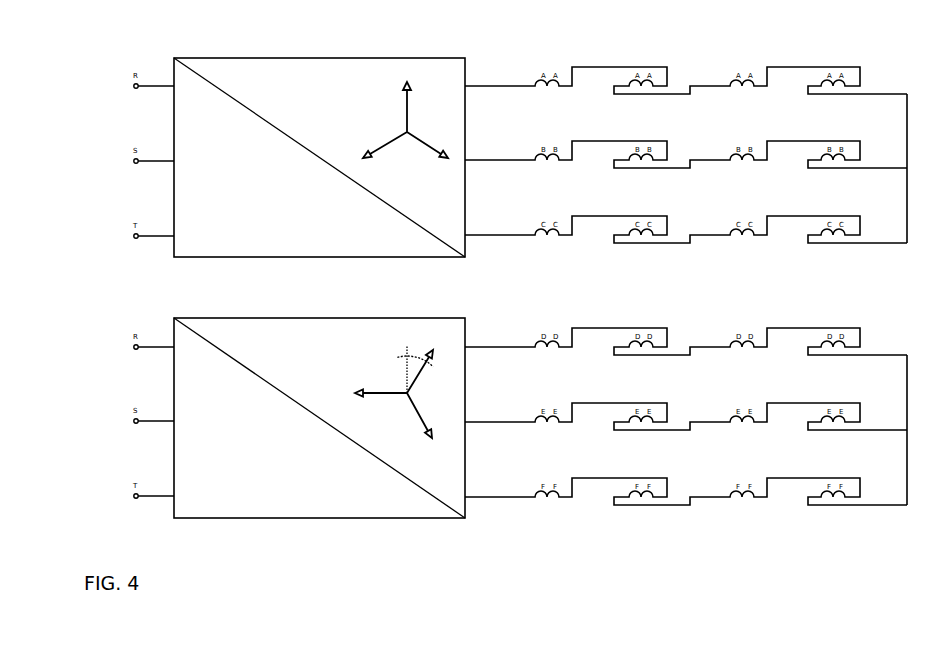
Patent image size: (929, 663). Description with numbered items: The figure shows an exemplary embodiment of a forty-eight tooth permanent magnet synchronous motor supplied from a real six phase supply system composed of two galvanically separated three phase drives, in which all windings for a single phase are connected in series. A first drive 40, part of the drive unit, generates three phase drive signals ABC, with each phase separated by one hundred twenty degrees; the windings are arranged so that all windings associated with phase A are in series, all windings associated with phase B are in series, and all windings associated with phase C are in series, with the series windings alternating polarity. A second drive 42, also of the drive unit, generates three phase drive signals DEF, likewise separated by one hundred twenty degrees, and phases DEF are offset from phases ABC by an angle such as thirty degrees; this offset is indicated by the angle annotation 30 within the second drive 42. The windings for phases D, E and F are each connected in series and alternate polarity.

The first drive 40 is at (240, 56).
The second drive 42 is at (213, 318).
The 30 degree phase angle annotation of drive 2 30 is at (415, 369).